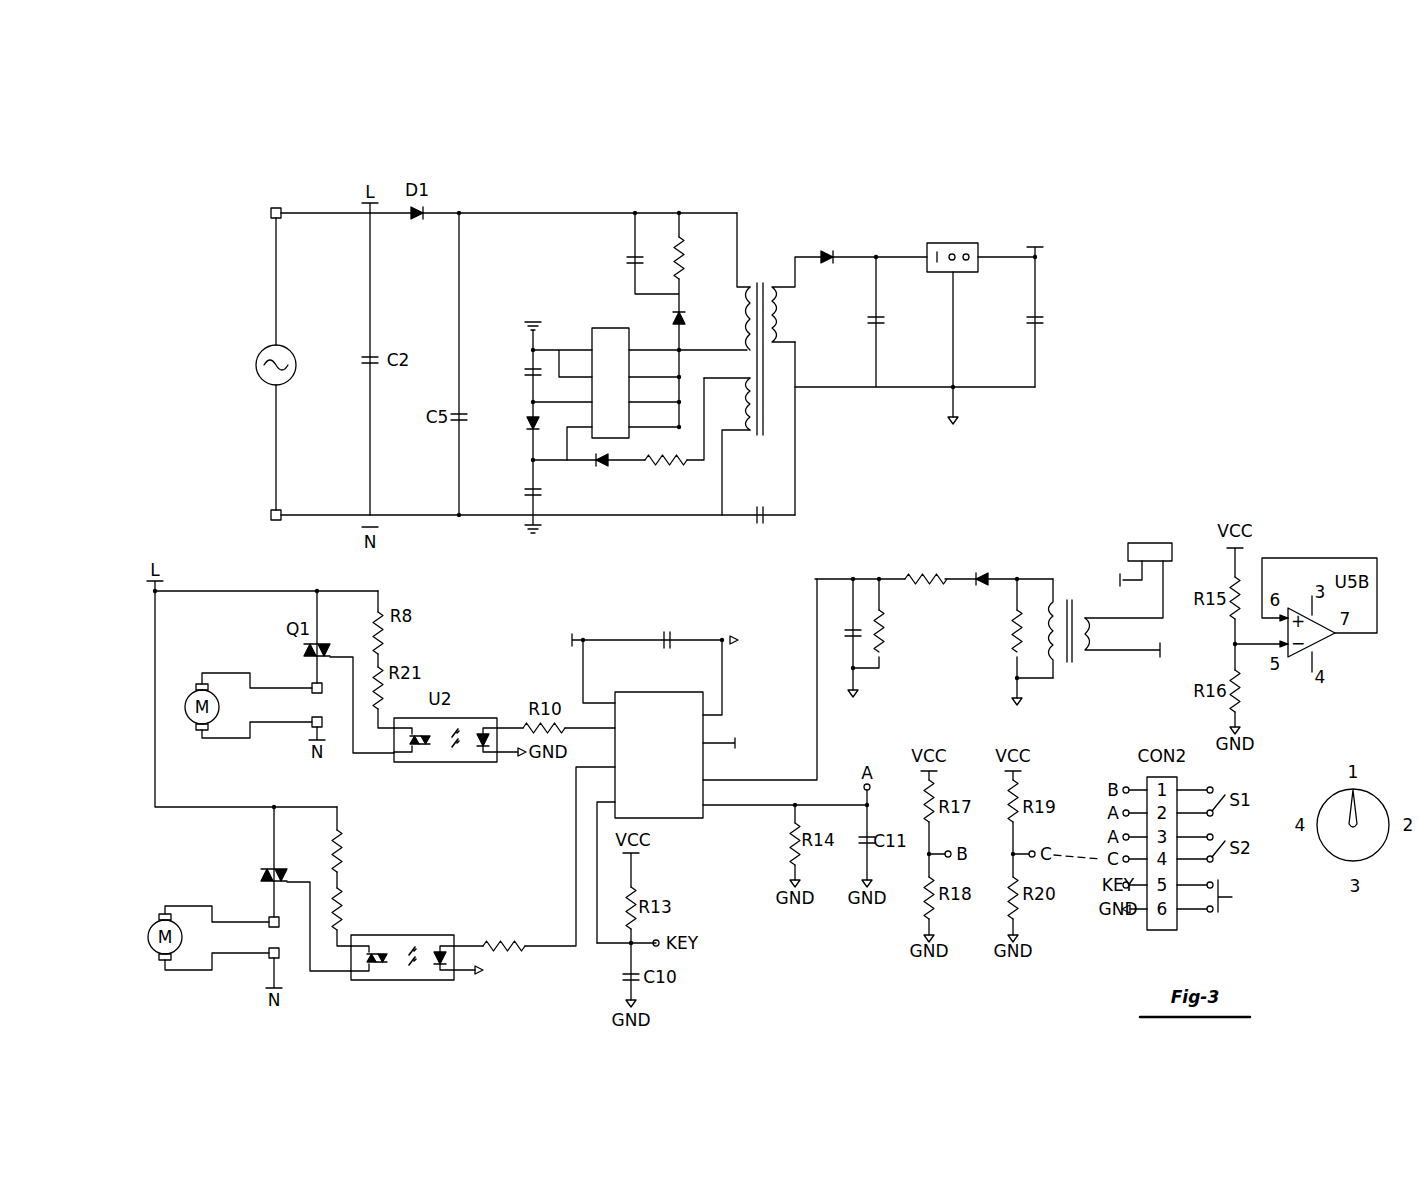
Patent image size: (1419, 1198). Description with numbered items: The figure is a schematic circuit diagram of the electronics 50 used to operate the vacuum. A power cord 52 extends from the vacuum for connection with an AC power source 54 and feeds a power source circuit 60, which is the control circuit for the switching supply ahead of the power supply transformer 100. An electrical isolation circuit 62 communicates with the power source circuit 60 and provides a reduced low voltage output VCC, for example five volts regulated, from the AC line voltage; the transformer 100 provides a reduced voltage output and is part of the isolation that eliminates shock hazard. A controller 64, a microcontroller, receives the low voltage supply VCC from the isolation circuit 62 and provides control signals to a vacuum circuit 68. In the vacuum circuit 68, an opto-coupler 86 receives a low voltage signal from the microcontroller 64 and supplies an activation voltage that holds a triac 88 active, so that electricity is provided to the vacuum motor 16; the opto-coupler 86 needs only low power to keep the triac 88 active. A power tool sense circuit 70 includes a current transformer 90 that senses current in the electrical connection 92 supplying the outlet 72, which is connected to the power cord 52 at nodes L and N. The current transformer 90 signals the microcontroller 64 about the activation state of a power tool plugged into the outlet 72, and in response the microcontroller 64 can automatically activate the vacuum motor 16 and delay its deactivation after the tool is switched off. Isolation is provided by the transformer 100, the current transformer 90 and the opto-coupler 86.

The vacuum motor 16 is at (193, 925).
The electronics 50 is at (1042, 266).
The power cord 52 is at (310, 344).
The AC power source 54 is at (252, 351).
The power source circuit 60 is at (641, 341).
The electrical isolation circuit 62 is at (916, 306).
The controller 64 is at (698, 761).
The vacuum circuit 68 is at (454, 875).
The power tool sense circuit 70 is at (945, 592).
The outlet 72 is at (1163, 539).
The opto-coupler 86 is at (437, 931).
The triac 88 is at (297, 889).
The current transformer 90 is at (1113, 633).
The outlet lead 92 is at (1150, 603).
The power supply transformer 100 is at (784, 325).